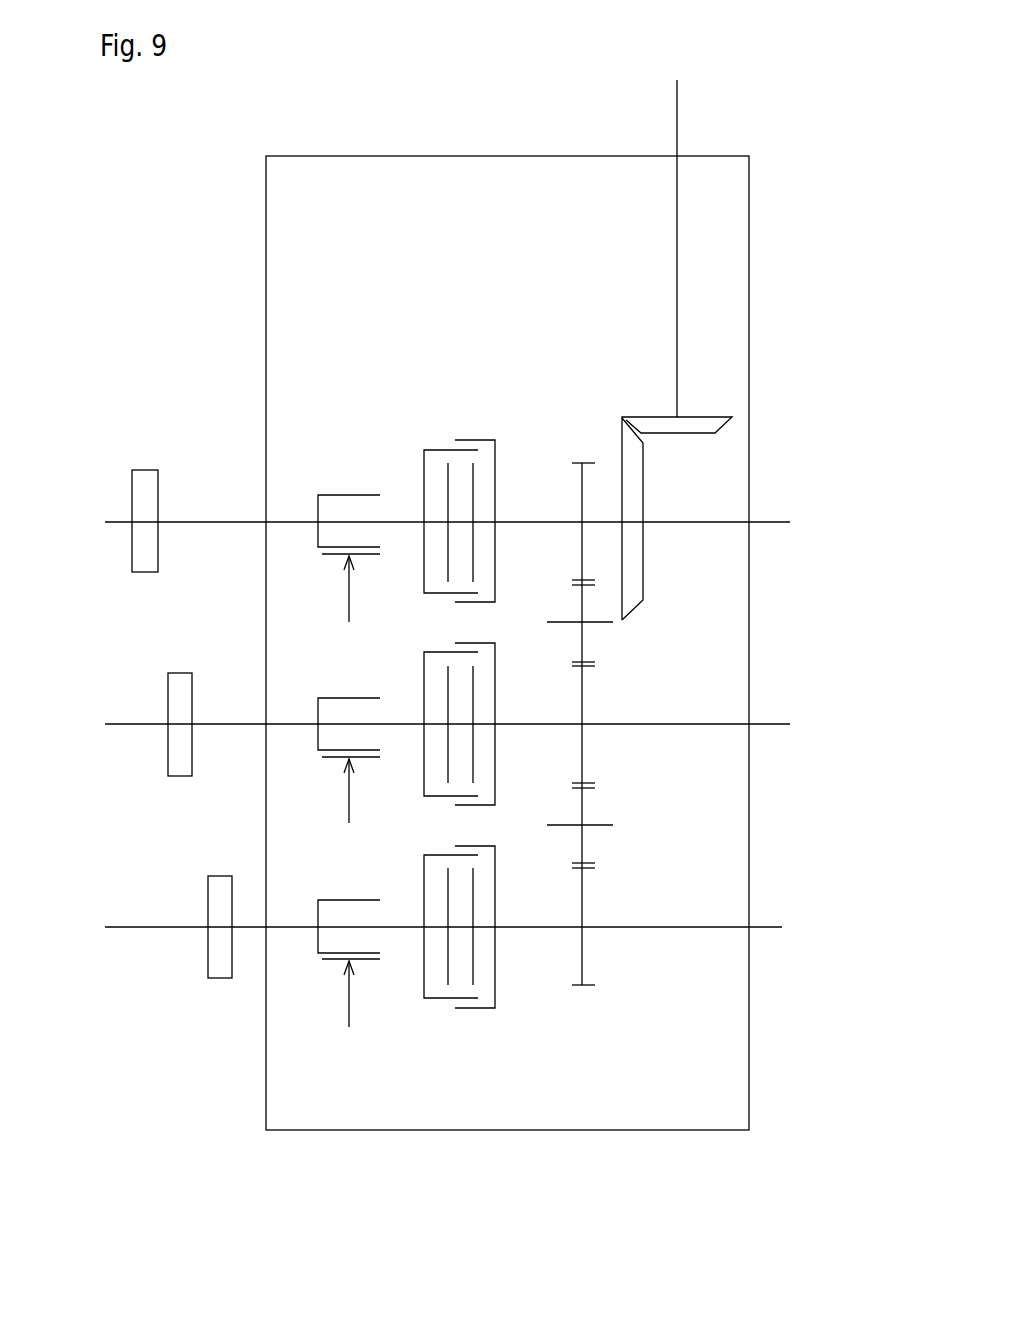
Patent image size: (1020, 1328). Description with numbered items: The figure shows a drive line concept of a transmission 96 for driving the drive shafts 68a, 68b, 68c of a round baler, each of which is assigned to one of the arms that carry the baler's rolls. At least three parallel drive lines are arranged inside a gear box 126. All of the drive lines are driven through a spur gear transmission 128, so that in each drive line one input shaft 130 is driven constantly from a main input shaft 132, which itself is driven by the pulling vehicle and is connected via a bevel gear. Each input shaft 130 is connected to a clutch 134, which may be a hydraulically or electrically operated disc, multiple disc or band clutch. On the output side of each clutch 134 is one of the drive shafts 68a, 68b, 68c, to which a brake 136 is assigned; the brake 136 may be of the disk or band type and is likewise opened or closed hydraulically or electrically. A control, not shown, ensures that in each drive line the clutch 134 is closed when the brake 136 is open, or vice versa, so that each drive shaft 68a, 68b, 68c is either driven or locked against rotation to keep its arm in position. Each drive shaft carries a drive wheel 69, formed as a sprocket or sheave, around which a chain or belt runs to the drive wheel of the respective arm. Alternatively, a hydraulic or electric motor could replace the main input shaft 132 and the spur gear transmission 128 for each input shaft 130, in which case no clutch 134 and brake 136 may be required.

The transmission 96 is at (561, 662).
The gear box 126 is at (748, 1092).
The spur gear transmission 128 is at (578, 990).
The input shaft 130 is at (767, 926).
The main input shaft 132 is at (678, 130).
The clutch 134 is at (455, 392).
The brake 136 is at (350, 1015).
The drive wheel 69 is at (140, 492).
The drive shaft 68a is at (240, 522).
The drive shaft 68b is at (184, 927).
The drive shaft 68c is at (247, 724).